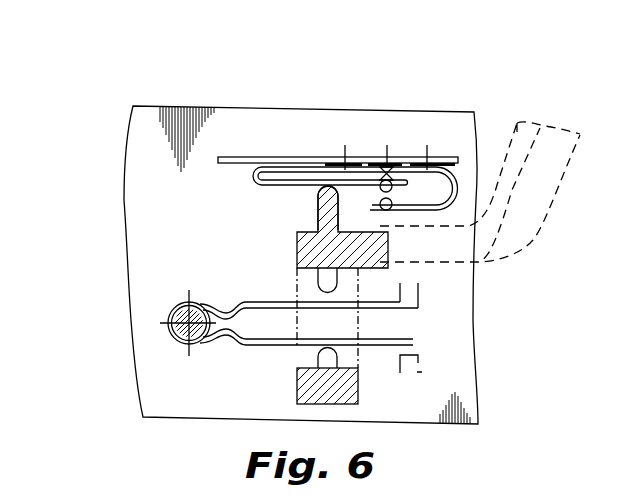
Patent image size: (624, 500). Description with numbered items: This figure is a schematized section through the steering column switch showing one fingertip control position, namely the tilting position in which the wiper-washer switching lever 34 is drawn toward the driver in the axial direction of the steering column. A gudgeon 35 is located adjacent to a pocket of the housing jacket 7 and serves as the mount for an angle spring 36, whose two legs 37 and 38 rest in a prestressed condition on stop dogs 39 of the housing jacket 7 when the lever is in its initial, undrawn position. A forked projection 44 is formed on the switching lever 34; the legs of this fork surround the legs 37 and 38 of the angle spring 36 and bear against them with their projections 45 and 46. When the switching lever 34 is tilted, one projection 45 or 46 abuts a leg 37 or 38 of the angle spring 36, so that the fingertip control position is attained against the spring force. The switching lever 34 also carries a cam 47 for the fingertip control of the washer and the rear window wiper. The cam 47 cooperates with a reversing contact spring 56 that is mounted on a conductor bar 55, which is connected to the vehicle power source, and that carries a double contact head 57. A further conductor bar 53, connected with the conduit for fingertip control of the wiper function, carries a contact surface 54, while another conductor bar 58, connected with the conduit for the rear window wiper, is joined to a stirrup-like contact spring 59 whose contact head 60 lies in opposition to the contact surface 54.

The housing jacket 7 is at (166, 184).
The wiper-washer switching lever 34 is at (523, 217).
The gudgeon 35 is at (179, 316).
The angle spring 36 is at (173, 342).
The leg 37 is at (257, 302).
The leg 38 is at (258, 349).
The stop dogs 39 is at (420, 286).
The forked projection 44 is at (293, 352).
The projection 45 is at (313, 279).
The projection 46 is at (333, 356).
The cam 47 is at (320, 192).
The conductor bar 53 is at (401, 163).
The contact surface 54 is at (378, 163).
The conductor bar 55 is at (330, 162).
The reversing contact spring 56 is at (287, 183).
The double contact head 57 is at (392, 188).
The conductor bar 58 is at (437, 160).
The stirrup-like contact spring 59 is at (460, 167).
The contact head 60 is at (379, 205).